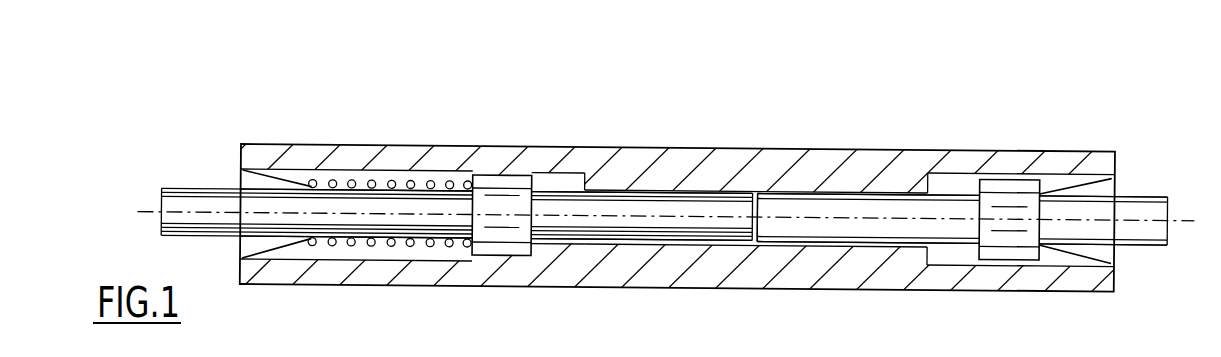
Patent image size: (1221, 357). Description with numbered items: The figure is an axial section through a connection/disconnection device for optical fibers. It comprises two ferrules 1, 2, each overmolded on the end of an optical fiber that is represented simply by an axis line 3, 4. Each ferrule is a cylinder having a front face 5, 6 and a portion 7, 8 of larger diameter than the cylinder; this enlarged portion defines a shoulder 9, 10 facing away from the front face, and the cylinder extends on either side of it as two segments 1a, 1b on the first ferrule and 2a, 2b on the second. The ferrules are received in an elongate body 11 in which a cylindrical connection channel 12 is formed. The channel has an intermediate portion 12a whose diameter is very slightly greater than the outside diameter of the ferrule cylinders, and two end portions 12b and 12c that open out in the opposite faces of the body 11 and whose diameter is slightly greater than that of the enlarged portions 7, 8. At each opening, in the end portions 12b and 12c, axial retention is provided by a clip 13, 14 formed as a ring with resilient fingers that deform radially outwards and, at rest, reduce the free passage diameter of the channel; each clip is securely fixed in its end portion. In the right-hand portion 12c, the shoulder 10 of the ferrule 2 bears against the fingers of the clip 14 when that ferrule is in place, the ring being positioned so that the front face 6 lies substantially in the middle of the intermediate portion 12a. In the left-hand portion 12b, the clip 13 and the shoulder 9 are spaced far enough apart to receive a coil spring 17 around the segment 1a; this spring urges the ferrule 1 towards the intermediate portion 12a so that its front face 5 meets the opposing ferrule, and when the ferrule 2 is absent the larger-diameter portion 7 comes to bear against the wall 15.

The ferrule 1 is at (573, 184).
The cylindrical segment 1a is at (657, 207).
The cylindrical segment 1b is at (398, 200).
The ferrule 2 is at (973, 183).
The cylindrical segment 2a is at (872, 200).
The cylindrical segment 2b is at (1082, 212).
The axis line 3 is at (552, 205).
The axis line 4 is at (948, 210).
The front face 5 is at (750, 238).
The front face 6 is at (762, 222).
The larger-diameter portion 7 is at (500, 245).
The larger-diameter portion 8 is at (990, 252).
The shoulder 9 is at (470, 250).
The shoulder 10 is at (1046, 262).
The elongate body 11 is at (785, 172).
The connection channel 12 is at (655, 250).
The intermediate portion 12a is at (577, 67).
The end portion 12b is at (245, 67).
The end portion 12c is at (1102, 67).
The clip 13 is at (283, 252).
The clip 14 is at (1074, 270).
The wall 15 is at (582, 252).
The coil spring 17 is at (378, 246).